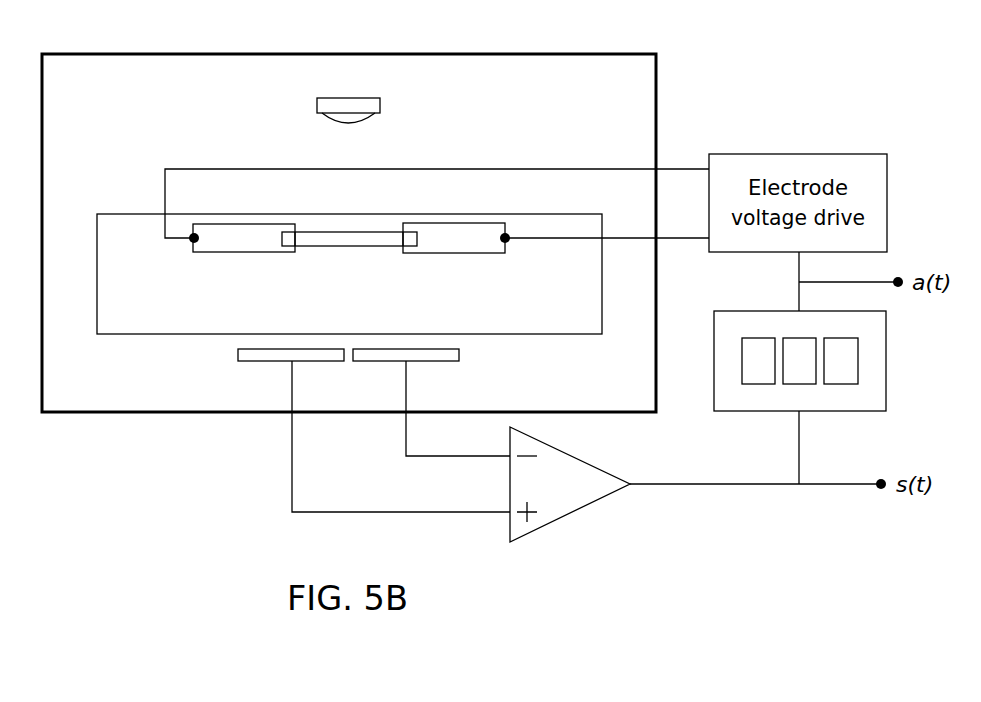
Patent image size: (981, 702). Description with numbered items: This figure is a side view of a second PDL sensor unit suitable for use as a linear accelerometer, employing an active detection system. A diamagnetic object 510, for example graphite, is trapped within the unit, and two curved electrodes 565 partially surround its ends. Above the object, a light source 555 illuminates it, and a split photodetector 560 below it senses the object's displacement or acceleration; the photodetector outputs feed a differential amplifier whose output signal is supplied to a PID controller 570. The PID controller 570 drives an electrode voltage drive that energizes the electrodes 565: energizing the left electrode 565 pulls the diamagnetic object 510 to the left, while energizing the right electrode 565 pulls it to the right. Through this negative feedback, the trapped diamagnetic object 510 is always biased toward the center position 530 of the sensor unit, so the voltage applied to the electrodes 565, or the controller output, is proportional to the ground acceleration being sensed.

The light source 555 is at (348, 105).
The center position 530 is at (327, 213).
The curved electrodes 565 is at (243, 242).
The diamagnetic object 510 is at (352, 239).
The split photodetector 560 is at (250, 355).
The PID controller 570 is at (878, 363).